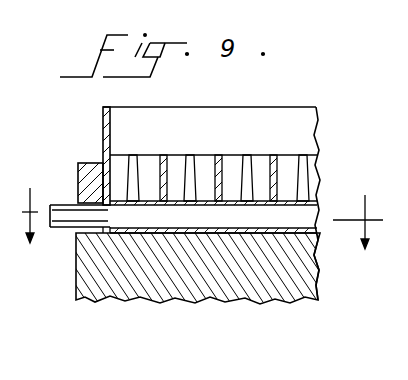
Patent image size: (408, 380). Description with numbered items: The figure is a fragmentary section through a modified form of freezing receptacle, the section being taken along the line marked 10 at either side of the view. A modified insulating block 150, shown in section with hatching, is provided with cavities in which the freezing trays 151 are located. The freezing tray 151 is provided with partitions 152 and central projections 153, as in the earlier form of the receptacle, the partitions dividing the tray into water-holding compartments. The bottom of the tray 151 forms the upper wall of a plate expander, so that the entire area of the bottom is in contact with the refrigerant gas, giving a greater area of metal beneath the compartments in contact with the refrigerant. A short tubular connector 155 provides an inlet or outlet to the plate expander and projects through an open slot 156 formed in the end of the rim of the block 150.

The section line 10- 10 is at (201, 233).
The insulating block 150 is at (290, 303).
The freezing tray 151 is at (262, 100).
The partitions 152 is at (182, 160).
The central projections 153 is at (300, 156).
The tubular connectors 155 is at (77, 203).
The open slots 156 is at (77, 231).